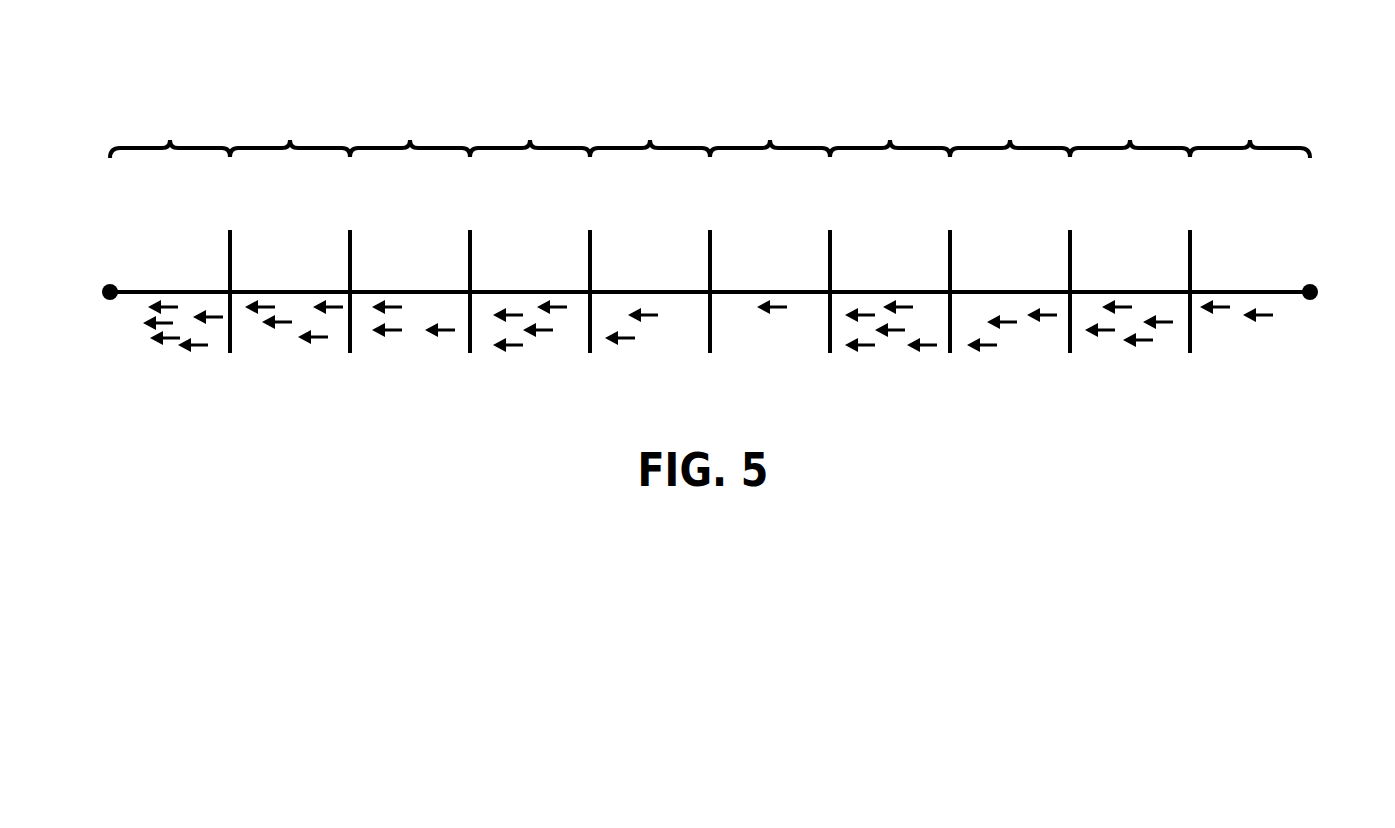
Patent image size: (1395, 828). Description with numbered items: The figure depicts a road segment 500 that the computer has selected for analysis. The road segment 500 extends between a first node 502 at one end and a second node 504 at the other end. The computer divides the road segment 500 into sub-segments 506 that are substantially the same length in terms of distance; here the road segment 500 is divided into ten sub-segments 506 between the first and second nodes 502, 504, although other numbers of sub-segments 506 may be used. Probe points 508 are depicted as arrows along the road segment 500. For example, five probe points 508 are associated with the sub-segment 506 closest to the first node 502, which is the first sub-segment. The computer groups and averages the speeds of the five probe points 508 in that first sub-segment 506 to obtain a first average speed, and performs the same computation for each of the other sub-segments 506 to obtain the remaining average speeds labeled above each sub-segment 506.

The road segment 500 is at (1297, 273).
The first node 502 is at (113, 298).
The second node 504 is at (1303, 298).
The sub-segments 506 is at (170, 148).
The probe points 508 is at (402, 334).